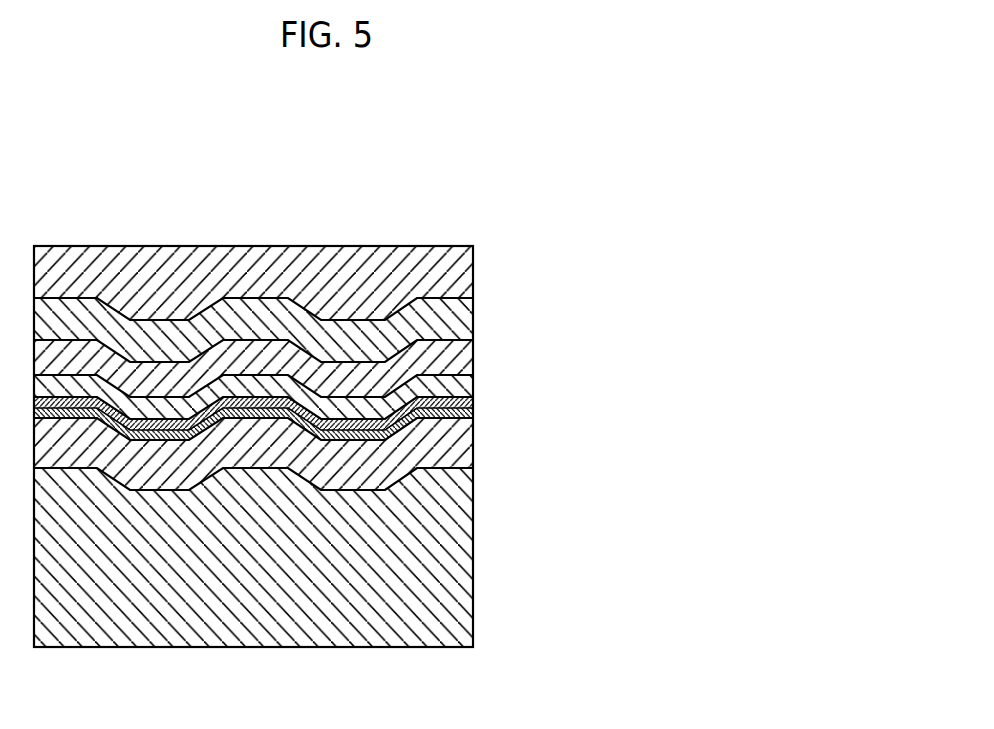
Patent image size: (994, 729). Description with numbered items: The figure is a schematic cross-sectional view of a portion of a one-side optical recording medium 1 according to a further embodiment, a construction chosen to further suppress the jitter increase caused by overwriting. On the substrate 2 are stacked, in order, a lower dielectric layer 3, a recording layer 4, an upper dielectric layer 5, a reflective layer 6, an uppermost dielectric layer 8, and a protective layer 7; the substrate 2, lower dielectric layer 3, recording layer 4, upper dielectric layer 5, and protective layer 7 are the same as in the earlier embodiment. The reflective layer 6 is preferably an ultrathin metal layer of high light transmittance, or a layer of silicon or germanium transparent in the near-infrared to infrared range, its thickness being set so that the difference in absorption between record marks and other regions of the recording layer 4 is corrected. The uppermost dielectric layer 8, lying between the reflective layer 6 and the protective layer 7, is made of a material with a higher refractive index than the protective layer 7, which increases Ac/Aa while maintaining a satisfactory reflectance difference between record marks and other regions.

The optical recording medium 1 is at (506, 626).
The substrate 2 is at (460, 542).
The lower dielectric layer 3 is at (462, 453).
The recording layer 4 is at (477, 398).
The upper dielectric layer 5 is at (473, 388).
The reflective layer 6 is at (465, 362).
The protective layer 7 is at (452, 270).
The uppermost dielectric layer 8 is at (475, 313).